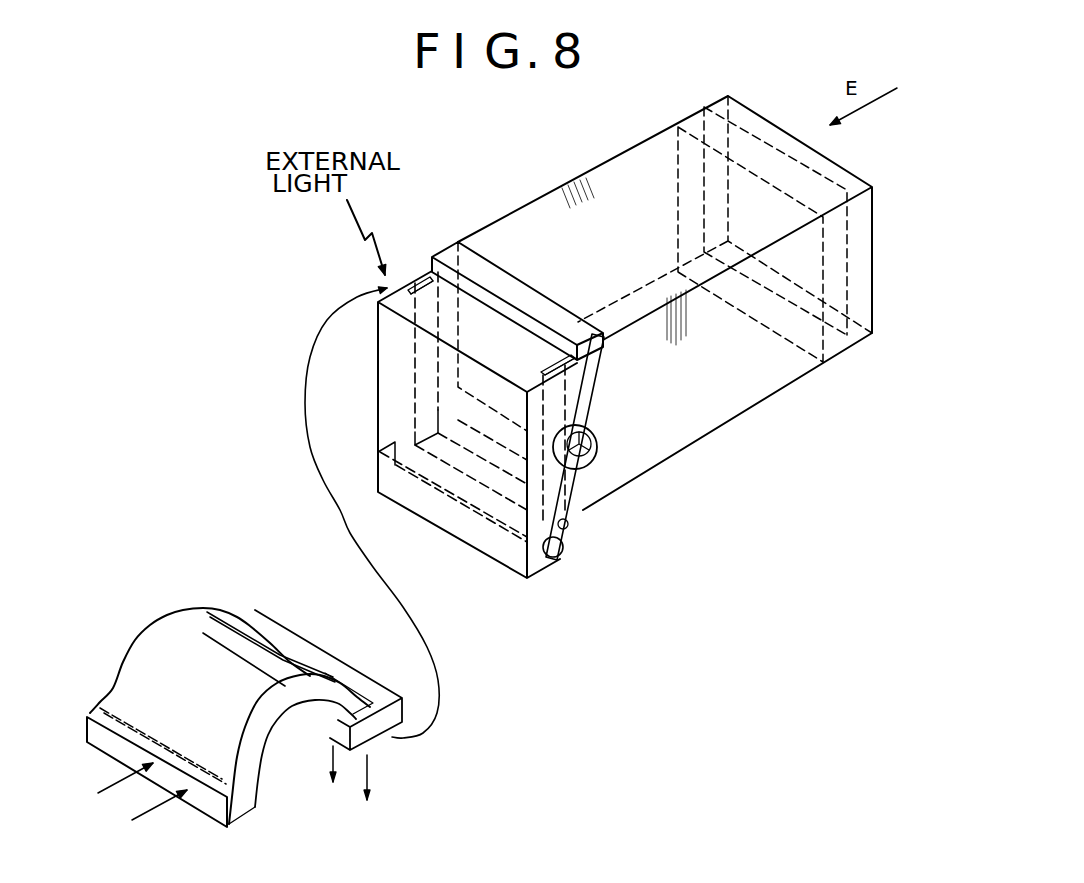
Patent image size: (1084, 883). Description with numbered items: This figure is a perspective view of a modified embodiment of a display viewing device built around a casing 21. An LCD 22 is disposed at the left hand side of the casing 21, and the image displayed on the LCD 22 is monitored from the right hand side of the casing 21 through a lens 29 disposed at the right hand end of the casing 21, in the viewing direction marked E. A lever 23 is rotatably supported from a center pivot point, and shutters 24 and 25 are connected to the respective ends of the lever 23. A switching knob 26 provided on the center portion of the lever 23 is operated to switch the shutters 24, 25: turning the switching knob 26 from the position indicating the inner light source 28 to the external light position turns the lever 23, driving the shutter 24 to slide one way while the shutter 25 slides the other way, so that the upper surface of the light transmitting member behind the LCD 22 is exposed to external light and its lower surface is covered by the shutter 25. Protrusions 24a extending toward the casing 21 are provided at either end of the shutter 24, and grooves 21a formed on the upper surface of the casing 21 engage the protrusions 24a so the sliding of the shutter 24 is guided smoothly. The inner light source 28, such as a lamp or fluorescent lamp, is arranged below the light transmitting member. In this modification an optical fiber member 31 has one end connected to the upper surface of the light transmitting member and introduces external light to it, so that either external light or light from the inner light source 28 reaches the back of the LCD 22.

The casing 21 is at (610, 163).
The grooves 21a is at (420, 273).
The LCD 22 is at (443, 370).
The lever 23 is at (600, 373).
The shutter 24 is at (460, 244).
The protrusions 24a is at (427, 273).
The shutter 25 is at (563, 523).
The switching knob 26 is at (597, 443).
The inner light source 28 is at (558, 558).
The lens 29 is at (758, 157).
The optical fiber member 31 is at (177, 615).